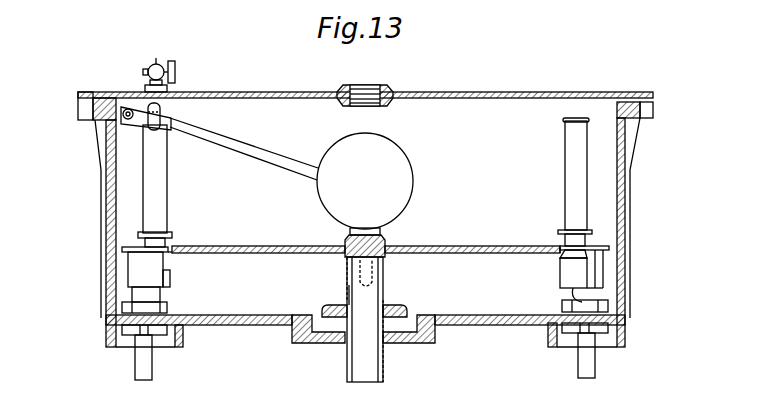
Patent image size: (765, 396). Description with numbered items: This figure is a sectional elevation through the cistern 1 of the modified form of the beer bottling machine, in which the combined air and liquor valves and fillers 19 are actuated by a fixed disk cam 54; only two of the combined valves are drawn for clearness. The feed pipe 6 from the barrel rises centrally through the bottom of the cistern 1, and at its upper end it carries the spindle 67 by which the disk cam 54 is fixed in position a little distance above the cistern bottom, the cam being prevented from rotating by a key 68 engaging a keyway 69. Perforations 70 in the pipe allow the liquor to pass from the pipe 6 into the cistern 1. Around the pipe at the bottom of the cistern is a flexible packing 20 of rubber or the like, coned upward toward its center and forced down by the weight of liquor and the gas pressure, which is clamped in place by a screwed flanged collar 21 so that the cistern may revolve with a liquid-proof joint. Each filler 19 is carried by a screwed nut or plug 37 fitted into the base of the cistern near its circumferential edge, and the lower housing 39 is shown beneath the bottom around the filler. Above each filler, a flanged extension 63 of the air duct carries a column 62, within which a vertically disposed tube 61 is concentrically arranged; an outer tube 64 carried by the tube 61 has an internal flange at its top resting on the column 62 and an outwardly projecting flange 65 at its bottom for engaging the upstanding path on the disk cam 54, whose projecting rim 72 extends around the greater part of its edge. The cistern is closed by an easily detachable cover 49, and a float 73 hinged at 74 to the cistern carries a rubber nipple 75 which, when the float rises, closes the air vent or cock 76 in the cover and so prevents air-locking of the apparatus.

The liquor tank or cistern 1 is at (101, 223).
The feed pipe 6 is at (348, 358).
The combined air and liquor valve and filler 19 is at (153, 355).
The flexible packing 20 is at (330, 308).
The screwed flanged collar 21 is at (405, 308).
The nut or plug 37 is at (120, 314).
The bottom housing 39 is at (105, 340).
The cover 49 is at (282, 91).
The disk cam 54 is at (284, 246).
The vertically disposed tube 61 is at (563, 120).
The column 62 is at (170, 247).
The flanged extension 63 is at (168, 273).
The outer tube 64 is at (167, 165).
The outwardly projecting flange 65 is at (143, 233).
The spindle 67 is at (381, 356).
The key 68 is at (350, 262).
The keyway 69 is at (348, 295).
The perforations 70 is at (372, 272).
The projecting rim 72 is at (175, 250).
The float 73 is at (411, 160).
The hinge 74 is at (123, 108).
The rubber nipple 75 is at (162, 110).
The air vent or cock 76 is at (158, 62).